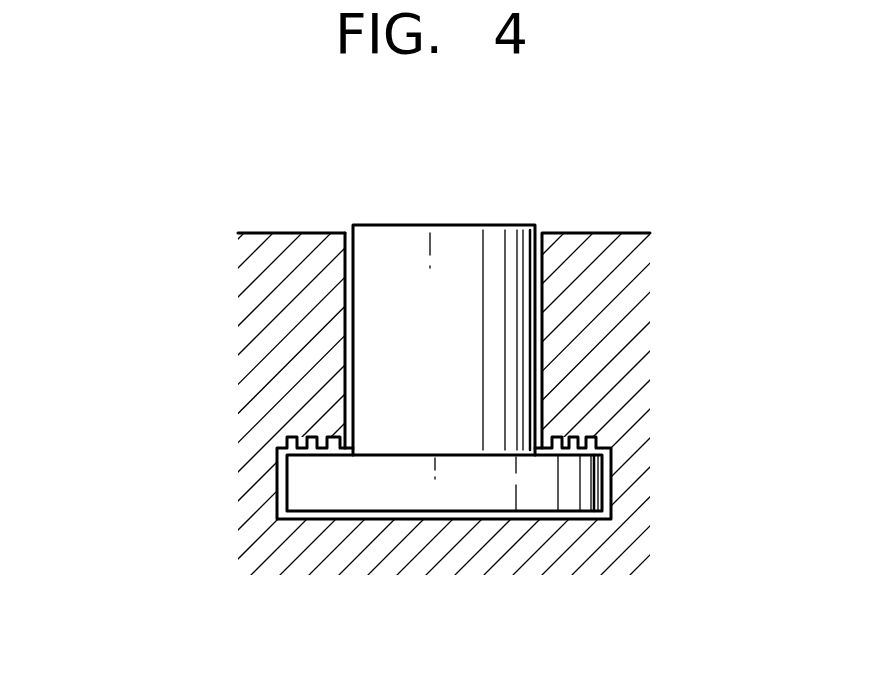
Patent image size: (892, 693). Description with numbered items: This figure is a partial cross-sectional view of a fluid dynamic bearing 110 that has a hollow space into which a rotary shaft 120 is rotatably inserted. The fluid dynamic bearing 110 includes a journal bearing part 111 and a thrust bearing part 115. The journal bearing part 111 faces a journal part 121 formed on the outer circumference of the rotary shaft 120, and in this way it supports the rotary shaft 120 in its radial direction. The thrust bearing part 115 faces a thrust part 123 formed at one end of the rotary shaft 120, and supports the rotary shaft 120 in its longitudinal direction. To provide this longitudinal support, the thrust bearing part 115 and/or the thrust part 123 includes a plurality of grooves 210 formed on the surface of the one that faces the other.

The fluid dynamic bearing 110 is at (236, 377).
The journal bearing part 111 is at (345, 275).
The thrust bearing part 115 is at (283, 462).
The rotary shaft 120 is at (453, 221).
The journal part 121 is at (537, 295).
The thrust part 123 is at (412, 498).
The grooves 210 is at (578, 448).